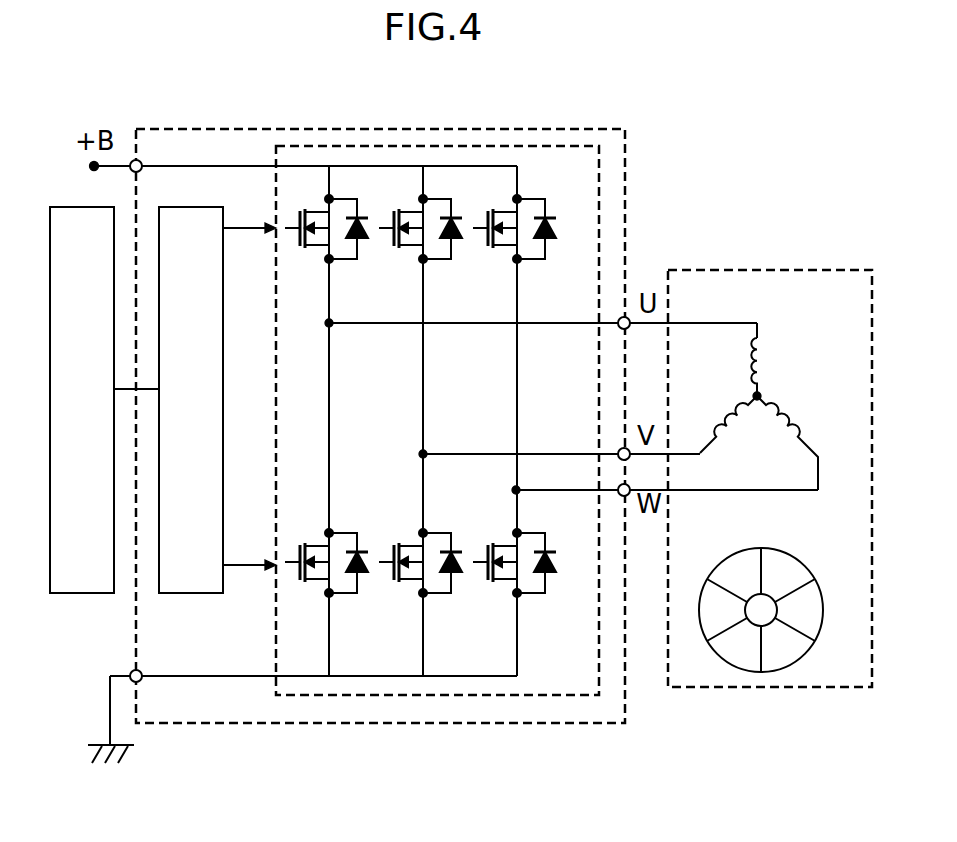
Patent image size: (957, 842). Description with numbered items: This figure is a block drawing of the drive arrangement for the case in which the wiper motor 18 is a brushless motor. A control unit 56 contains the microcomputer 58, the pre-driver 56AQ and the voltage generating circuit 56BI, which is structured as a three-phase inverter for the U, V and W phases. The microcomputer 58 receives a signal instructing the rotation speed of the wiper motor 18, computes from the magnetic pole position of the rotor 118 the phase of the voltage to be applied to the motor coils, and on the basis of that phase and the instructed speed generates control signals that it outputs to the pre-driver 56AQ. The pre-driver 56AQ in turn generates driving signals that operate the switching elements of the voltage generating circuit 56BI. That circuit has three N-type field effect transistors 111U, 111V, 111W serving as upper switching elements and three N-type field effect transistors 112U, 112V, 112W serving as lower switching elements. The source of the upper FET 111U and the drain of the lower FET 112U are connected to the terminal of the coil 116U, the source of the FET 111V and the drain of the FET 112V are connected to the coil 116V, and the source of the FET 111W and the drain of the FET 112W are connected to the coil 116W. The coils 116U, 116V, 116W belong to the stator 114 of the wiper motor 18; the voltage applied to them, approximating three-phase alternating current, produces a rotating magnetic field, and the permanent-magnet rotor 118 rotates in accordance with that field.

The wiper control circuit 56 is at (233, 127).
The voltage generating circuit 56BI is at (400, 146).
The pre-driver 56AQ is at (192, 595).
The microcomputer 58 is at (86, 595).
The U-phase upper FET 111U is at (354, 268).
The V-phase upper FET 111V is at (448, 268).
The W-phase upper FET 111W is at (540, 268).
The U-phase lower FET 112U is at (354, 605).
The V-phase lower FET 112V is at (448, 605).
The W-phase lower FET 112W is at (540, 605).
The stator 114 is at (741, 331).
The U-phase coil 116U is at (768, 348).
The V-phase coil 116V is at (736, 436).
The W-phase coil 116W is at (803, 405).
The rotor 118 is at (803, 562).
The wiper motor 18 is at (790, 270).